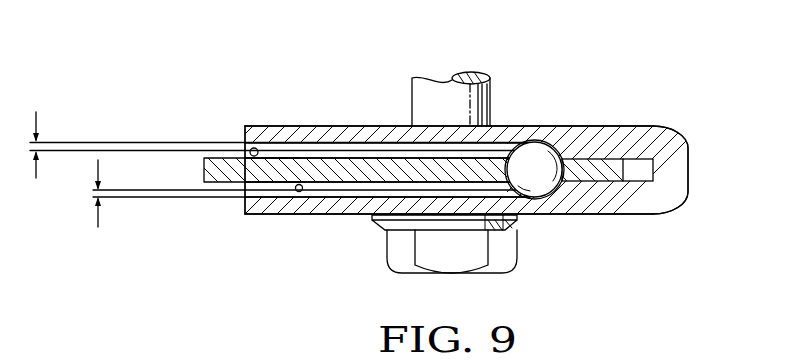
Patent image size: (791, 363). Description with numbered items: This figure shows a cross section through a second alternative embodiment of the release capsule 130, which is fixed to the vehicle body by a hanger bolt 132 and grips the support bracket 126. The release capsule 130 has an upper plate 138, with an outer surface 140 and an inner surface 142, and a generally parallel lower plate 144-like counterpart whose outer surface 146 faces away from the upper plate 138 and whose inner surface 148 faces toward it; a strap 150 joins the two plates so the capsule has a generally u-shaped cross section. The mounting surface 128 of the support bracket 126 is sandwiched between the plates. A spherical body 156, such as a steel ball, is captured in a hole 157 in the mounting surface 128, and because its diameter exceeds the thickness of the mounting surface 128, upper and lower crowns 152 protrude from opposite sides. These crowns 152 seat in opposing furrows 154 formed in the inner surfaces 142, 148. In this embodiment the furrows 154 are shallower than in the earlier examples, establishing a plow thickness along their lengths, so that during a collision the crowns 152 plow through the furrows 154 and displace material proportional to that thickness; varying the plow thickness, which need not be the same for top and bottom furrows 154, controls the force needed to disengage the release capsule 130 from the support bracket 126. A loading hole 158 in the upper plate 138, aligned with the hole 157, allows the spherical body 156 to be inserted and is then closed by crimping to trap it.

The support bracket 126 is at (200, 166).
The mounting surface 128 is at (306, 157).
The release capsule 130 is at (686, 131).
The hanger bolt 132 is at (491, 84).
The upper plate 138 is at (280, 138).
The outer surface of upper plate 140 is at (368, 133).
The inner surface of upper plate 142 is at (340, 150).
The outer surface of lower plate 146 is at (588, 216).
The inner surface of lower plate 148 is at (265, 186).
The strap 150 is at (688, 168).
The crown 152 is at (530, 143).
The furrow 154 is at (255, 148).
The spherical body 156 is at (537, 180).
The hole 157 is at (582, 160).
The loading hole 158 is at (521, 141).